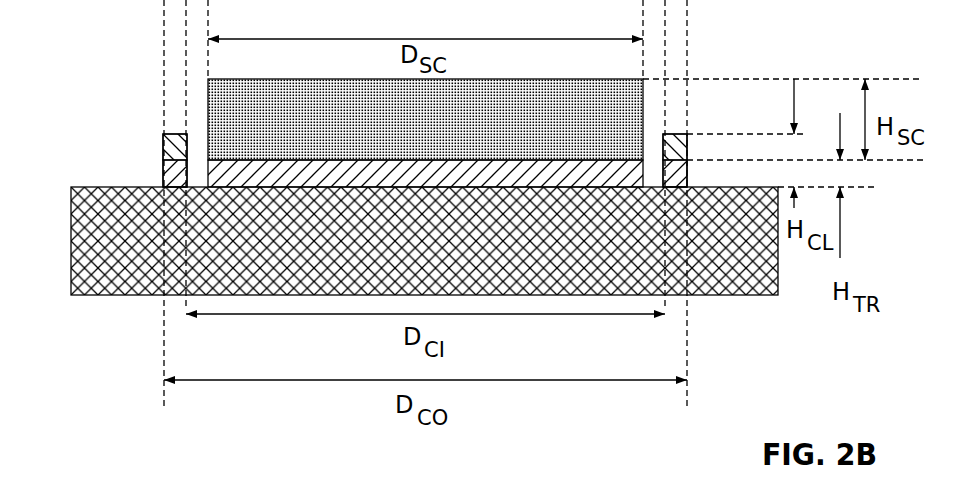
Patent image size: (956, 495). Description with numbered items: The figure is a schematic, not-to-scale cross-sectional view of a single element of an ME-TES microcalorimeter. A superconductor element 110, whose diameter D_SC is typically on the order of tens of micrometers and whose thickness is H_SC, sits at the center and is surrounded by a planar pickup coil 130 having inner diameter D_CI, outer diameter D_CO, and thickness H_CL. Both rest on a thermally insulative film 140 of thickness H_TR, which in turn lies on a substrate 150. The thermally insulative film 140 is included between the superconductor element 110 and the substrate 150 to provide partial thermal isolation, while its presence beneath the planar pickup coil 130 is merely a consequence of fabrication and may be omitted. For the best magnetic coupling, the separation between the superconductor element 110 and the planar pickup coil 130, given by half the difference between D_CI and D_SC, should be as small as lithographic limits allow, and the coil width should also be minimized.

The superconductor element 110 is at (603, 106).
The planar pickup coil 130 is at (153, 143).
The thermally insulative film 140 is at (257, 175).
The substrate 150 is at (112, 258).